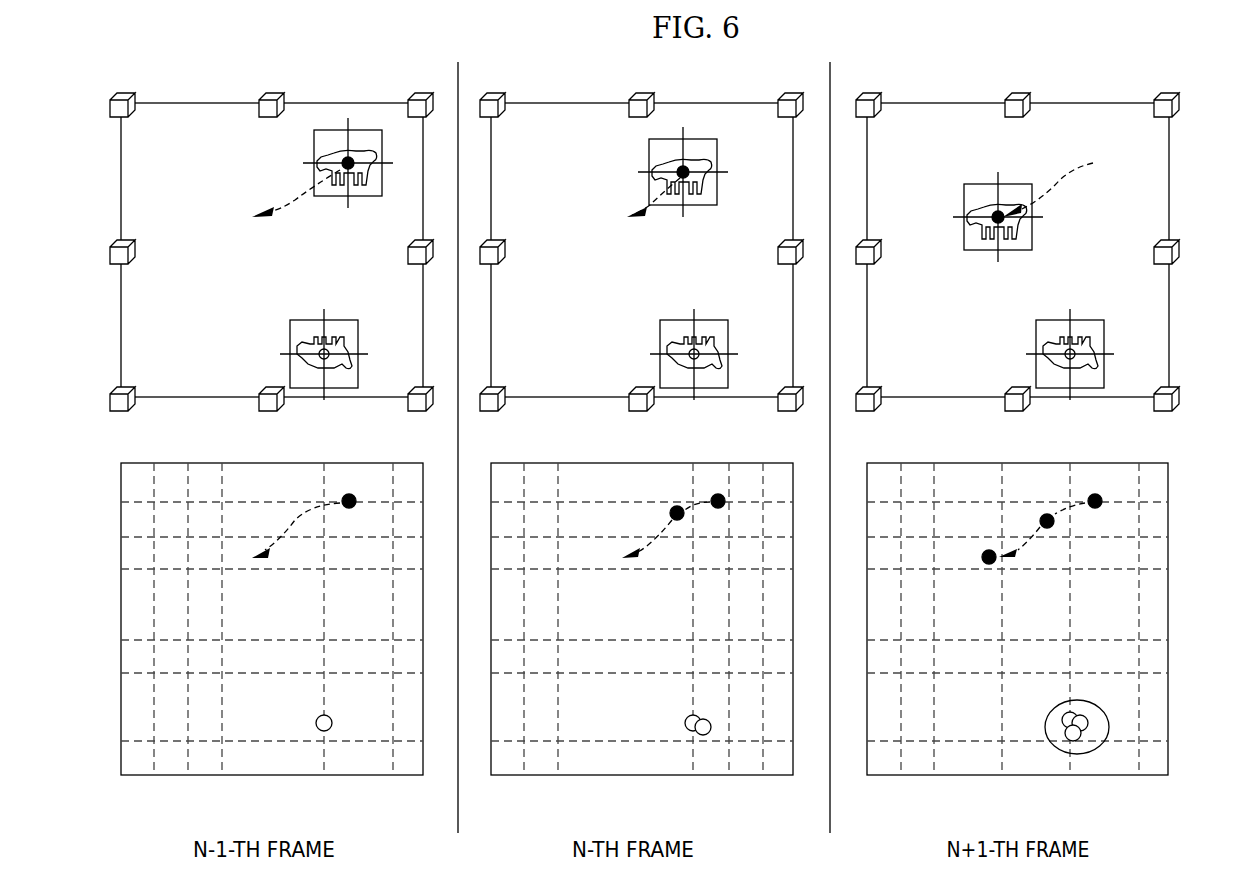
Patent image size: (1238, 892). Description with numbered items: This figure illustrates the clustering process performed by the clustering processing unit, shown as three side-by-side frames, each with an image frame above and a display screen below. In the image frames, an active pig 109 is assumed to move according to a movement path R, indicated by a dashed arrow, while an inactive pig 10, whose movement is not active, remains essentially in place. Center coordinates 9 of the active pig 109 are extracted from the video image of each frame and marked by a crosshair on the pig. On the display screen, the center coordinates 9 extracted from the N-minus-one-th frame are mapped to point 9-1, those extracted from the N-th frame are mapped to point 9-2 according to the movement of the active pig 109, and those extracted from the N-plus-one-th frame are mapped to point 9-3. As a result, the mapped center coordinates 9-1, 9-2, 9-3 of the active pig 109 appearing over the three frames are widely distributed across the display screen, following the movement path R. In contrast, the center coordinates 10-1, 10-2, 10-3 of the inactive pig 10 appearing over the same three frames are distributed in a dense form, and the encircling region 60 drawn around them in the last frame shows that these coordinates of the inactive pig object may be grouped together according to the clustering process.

The center coordinates 9 is at (355, 167).
The active pig 109 is at (349, 157).
The movement path R is at (278, 205).
The inactive pig 10 is at (327, 362).
The mapped center coordinates of N-1-th frame 9-1 is at (350, 495).
The mapped center coordinates of N-th frame 9-2 is at (677, 505).
The mapped center coordinates of N+1-th frame 9-3 is at (989, 548).
The inactive pig center coordinates of N-1-th frame 10-1 is at (326, 732).
The inactive pig center coordinates of N-th frame 10-2 is at (710, 733).
The inactive pig center coordinates of N+1-th frame 10-3 is at (1073, 741).
The cluster region of second object positions 60 is at (1068, 748).